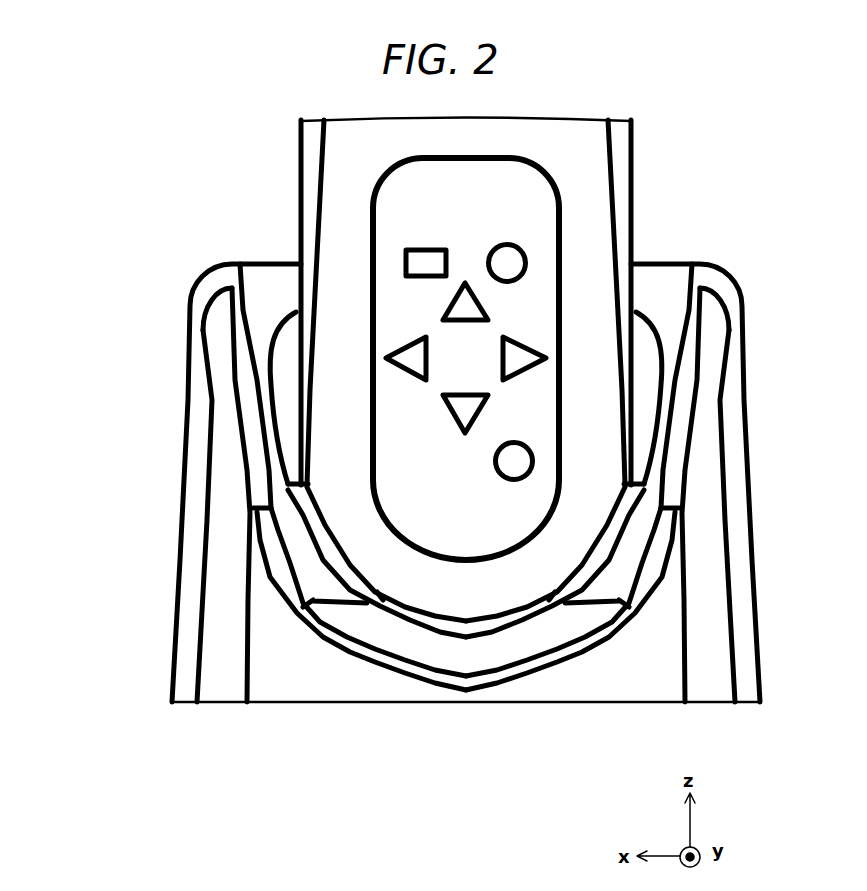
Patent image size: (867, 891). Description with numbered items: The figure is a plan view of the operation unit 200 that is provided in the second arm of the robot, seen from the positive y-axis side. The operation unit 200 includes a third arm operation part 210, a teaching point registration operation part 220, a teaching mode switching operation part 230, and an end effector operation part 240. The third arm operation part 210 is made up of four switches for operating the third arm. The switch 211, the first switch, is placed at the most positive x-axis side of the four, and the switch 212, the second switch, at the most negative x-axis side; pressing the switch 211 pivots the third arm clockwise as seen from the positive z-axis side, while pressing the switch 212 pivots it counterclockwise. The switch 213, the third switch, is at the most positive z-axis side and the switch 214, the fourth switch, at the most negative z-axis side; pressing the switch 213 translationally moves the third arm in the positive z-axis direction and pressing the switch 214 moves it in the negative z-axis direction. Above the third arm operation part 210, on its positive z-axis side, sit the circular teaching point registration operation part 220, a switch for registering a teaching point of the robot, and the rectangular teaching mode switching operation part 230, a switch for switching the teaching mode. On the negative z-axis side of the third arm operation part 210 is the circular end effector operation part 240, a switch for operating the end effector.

The operation unit 200 is at (373, 199).
The third arm operation part 210 is at (281, 373).
The switch 211 is at (408, 357).
The switch 212 is at (518, 358).
The switch 213 is at (455, 305).
The switch 214 is at (463, 408).
The teaching point registration operation part 220 is at (508, 262).
The teaching mode switching operation part 230 is at (418, 262).
The end effector operation part 240 is at (513, 462).